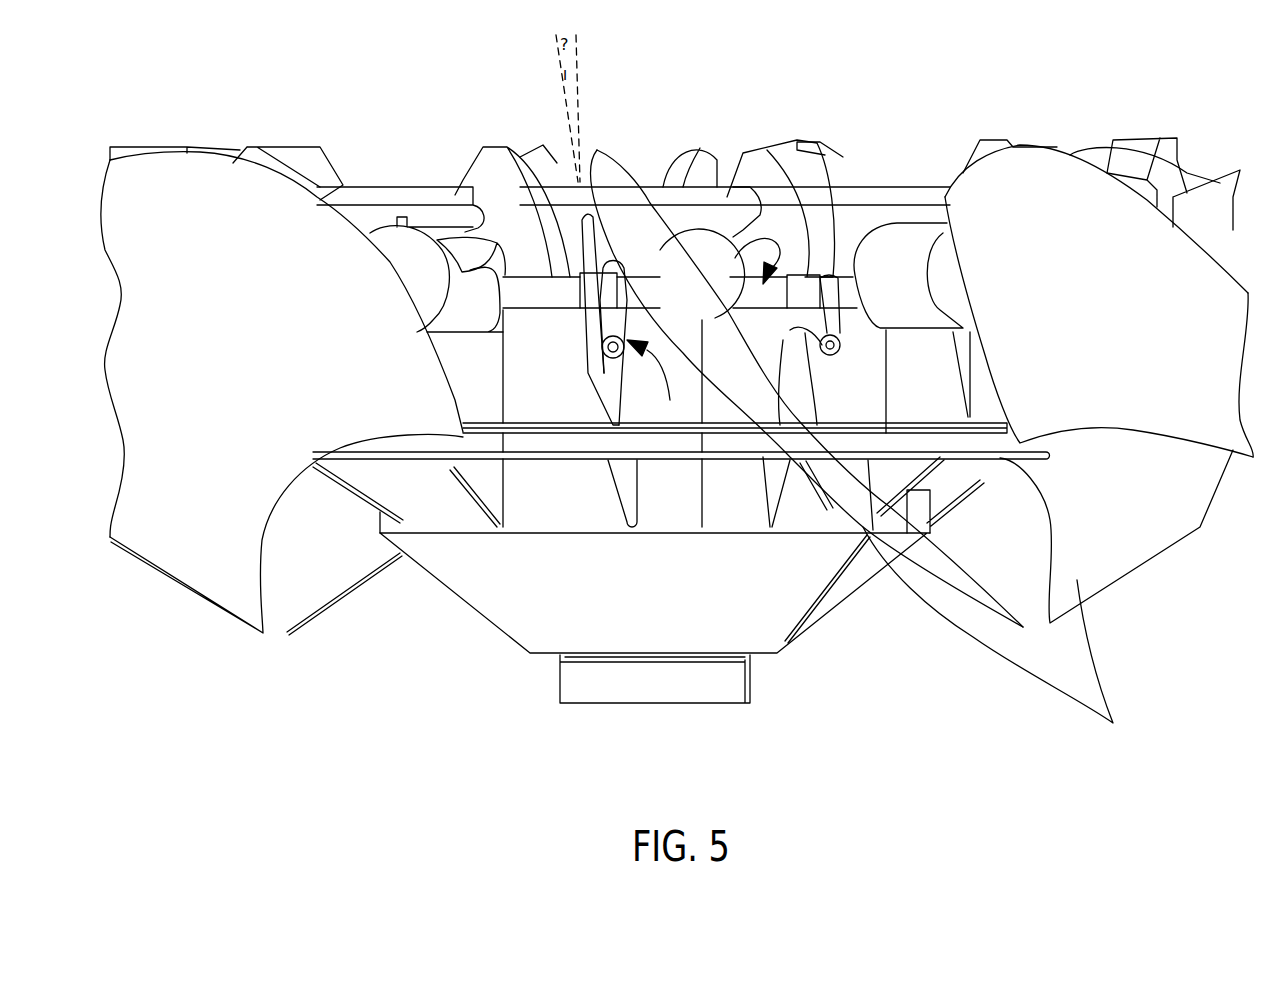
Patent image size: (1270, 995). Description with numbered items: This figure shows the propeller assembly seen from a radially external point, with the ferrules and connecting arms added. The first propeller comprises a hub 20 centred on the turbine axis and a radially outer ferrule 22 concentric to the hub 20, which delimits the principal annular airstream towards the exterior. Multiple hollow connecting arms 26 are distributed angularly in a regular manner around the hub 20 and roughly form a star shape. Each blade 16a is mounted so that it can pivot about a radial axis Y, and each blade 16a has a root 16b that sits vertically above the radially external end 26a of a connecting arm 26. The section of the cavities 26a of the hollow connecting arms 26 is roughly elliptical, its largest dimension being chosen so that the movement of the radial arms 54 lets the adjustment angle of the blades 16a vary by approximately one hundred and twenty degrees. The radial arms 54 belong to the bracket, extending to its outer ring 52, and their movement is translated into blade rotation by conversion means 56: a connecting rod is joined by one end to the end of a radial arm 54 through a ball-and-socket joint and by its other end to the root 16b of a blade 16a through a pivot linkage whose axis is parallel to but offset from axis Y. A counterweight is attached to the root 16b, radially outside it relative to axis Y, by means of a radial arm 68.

The blade 16a is at (190, 537).
The root 16b is at (690, 243).
The hub 20 is at (593, 687).
The radially outer ferrule 22 is at (707, 505).
The connecting arm 26 is at (627, 500).
The radially external end of connecting arm 26a is at (592, 349).
The outer ring 52 is at (792, 236).
The radial arm 54 is at (790, 330).
The conversion means 56 is at (670, 400).
The radial arm 68 is at (462, 182).